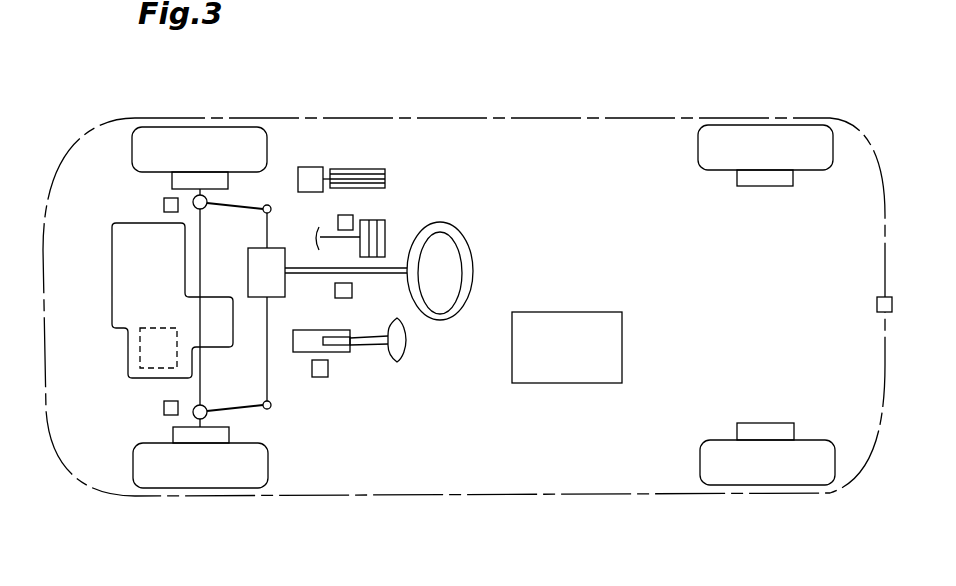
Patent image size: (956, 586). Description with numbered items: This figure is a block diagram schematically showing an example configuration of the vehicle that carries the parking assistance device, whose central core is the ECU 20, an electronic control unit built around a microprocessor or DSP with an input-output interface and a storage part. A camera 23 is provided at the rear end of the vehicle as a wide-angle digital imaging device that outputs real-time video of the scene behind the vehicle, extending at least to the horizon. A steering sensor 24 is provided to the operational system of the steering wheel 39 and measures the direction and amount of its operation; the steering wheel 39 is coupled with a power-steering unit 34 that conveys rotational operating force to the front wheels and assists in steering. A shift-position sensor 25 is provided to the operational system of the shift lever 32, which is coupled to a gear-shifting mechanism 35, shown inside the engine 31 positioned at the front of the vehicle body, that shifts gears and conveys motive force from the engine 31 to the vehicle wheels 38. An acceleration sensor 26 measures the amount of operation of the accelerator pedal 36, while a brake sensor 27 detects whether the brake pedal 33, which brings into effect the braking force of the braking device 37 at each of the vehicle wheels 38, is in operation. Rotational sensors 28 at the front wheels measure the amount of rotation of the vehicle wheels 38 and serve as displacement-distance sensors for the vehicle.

The ECU 20 is at (570, 312).
The camera 23 is at (877, 305).
The steering sensor 24 is at (343, 298).
The shift-position sensor 25 is at (328, 367).
The acceleration sensor 26 is at (312, 167).
The brake sensor 27 is at (338, 222).
The rotational sensors 28 is at (163, 204).
The engine 31 is at (112, 300).
The shift lever 32 is at (407, 340).
The brake pedal 33 is at (385, 233).
The power-steering unit 34 is at (248, 284).
The gear-shifting mechanism 35 is at (140, 350).
The accelerator pedal 36 is at (370, 169).
The braking device 37 is at (172, 185).
The vehicle wheels 38 is at (202, 128).
The steering wheel 39 is at (475, 262).